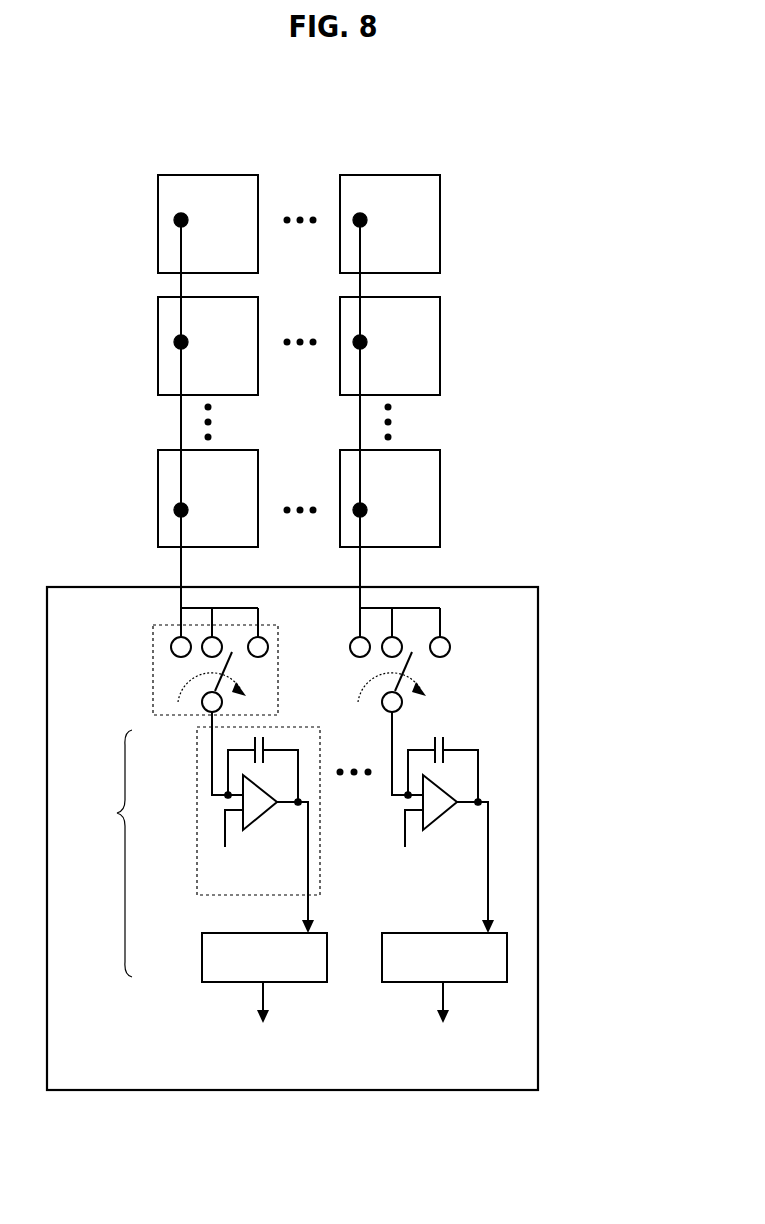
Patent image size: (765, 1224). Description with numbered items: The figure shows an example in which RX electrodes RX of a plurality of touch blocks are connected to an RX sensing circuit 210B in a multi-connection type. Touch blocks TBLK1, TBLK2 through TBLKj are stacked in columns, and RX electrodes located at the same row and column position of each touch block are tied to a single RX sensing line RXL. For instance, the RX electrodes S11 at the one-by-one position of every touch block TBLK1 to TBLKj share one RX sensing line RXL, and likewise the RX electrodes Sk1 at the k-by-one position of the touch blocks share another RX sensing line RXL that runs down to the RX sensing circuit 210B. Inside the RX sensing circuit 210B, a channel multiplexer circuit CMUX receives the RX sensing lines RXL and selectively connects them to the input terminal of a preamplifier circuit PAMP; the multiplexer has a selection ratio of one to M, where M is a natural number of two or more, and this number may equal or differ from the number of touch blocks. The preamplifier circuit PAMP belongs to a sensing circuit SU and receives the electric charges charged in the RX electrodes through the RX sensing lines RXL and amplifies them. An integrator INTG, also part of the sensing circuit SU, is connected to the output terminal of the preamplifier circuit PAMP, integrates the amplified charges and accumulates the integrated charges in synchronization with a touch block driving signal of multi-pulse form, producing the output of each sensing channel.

The RX electrode RX is at (224, 175).
The RX sensing line RXL is at (160, 564).
The first touch block TBLK1 is at (460, 222).
The second touch block TBLK2 is at (460, 344).
The j-th touch block TBLKj is at (460, 478).
The RX electrode of 1*1 position S11 is at (202, 363).
The RX electrode of k*1 position Sk1 is at (380, 363).
The RX sensing circuit 210B is at (538, 632).
The channel multiplexer circuit CMUX is at (276, 661).
The preamplifier circuit PAMP is at (318, 822).
The sensing circuit SU is at (112, 853).
The integrator INTG is at (354, 994).